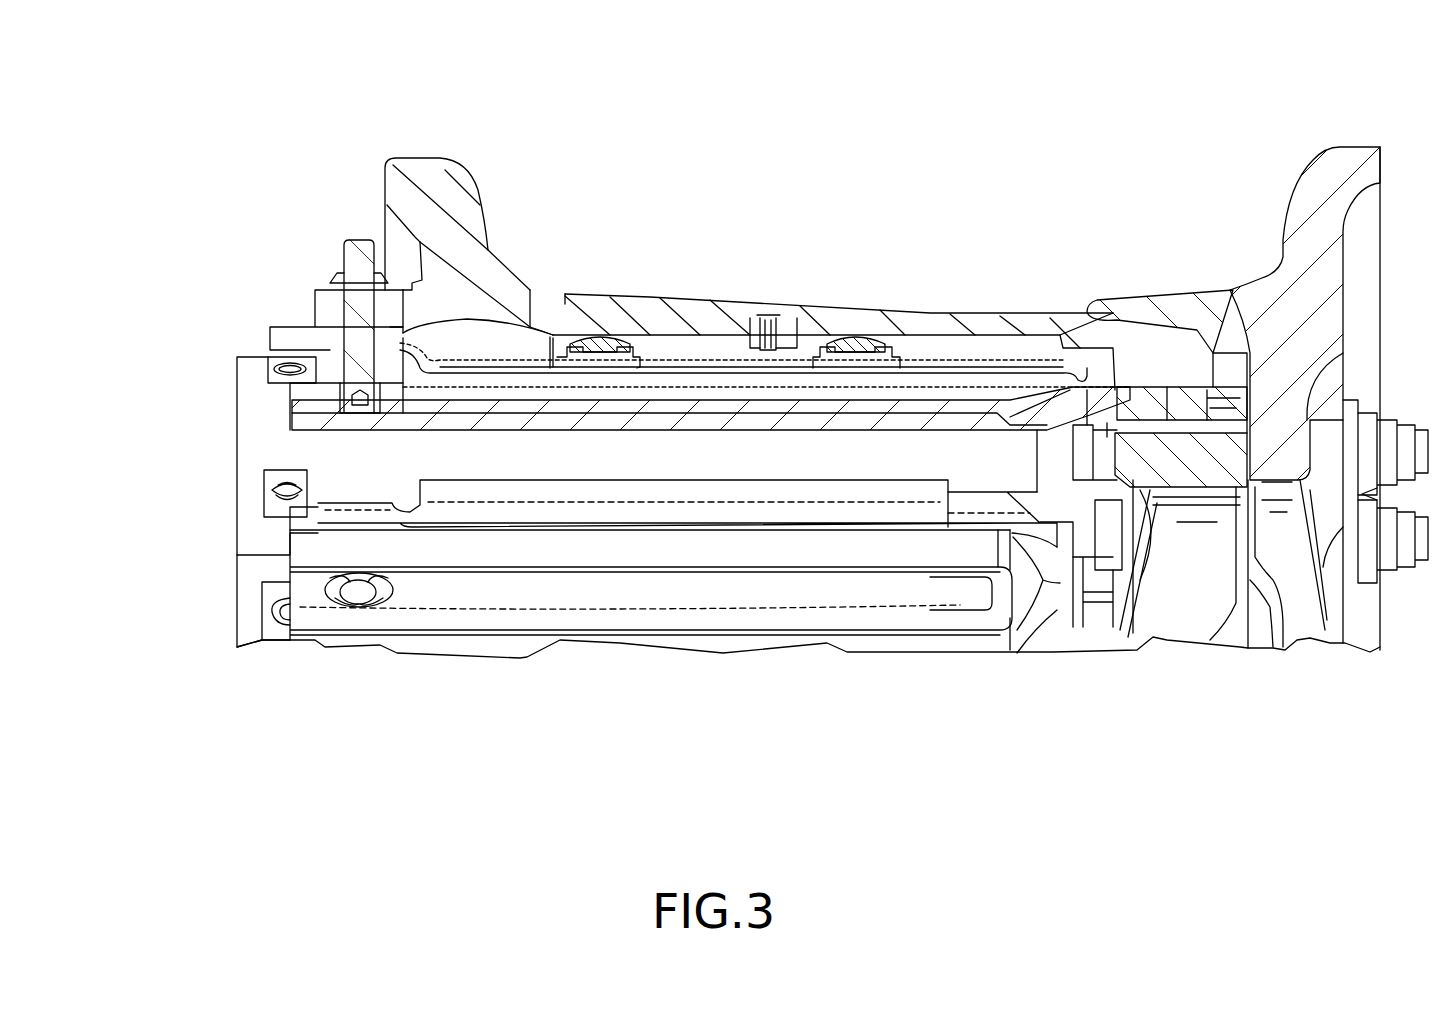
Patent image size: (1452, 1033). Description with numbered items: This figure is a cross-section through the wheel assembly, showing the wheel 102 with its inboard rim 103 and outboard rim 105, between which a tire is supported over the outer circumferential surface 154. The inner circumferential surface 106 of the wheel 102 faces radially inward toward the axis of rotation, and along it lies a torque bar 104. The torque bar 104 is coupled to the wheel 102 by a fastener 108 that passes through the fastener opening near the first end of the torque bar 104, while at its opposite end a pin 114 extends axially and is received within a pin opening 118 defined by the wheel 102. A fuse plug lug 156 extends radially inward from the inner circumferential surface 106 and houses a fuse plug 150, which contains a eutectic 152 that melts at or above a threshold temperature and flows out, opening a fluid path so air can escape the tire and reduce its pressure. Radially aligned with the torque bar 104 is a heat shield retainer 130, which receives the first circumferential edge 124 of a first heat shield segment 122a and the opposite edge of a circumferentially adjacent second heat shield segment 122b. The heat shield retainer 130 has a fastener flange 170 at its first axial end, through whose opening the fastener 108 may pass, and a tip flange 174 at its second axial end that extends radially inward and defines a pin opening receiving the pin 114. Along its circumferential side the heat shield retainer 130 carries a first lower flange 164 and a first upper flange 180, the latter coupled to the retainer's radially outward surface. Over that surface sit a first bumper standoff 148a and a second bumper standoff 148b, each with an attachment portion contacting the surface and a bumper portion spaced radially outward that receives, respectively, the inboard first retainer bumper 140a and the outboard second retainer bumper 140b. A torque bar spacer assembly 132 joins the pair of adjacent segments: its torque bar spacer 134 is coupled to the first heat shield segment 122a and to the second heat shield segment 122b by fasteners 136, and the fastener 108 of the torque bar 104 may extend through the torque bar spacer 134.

The wheel 102 is at (503, 293).
The inboard rim 103 is at (437, 187).
The torque bar 104 is at (748, 402).
The outboard rim 105 is at (1337, 165).
The inner circumferential surface 106 is at (472, 558).
The fastener 108 is at (352, 395).
The pin 114 is at (1137, 385).
The pin opening 118 is at (1207, 355).
The first heat shield segment 122a is at (257, 530).
The second heat shield segment 122b is at (243, 615).
The first circumferential edge 124 is at (1005, 506).
The heat shield retainer 130 is at (973, 370).
The torque bar spacer assembly 132 is at (245, 328).
The torque bar spacer 134 is at (287, 333).
The fastener 136 is at (305, 367).
The first retainer bumper 140a is at (600, 340).
The second retainer bumper 140b is at (853, 335).
The first bumper standoff 148a is at (552, 337).
The second bumper standoff 148b is at (907, 352).
The fuse plug 150 is at (760, 313).
The eutectic 152 is at (763, 330).
The outer circumferential surface 154 is at (1012, 310).
The fuse plug lug 156 is at (740, 340).
The first lower flange 164 is at (677, 513).
The fastener flange 170 is at (394, 300).
The tip flange 174 is at (1078, 432).
The first upper flange 180 is at (967, 510).